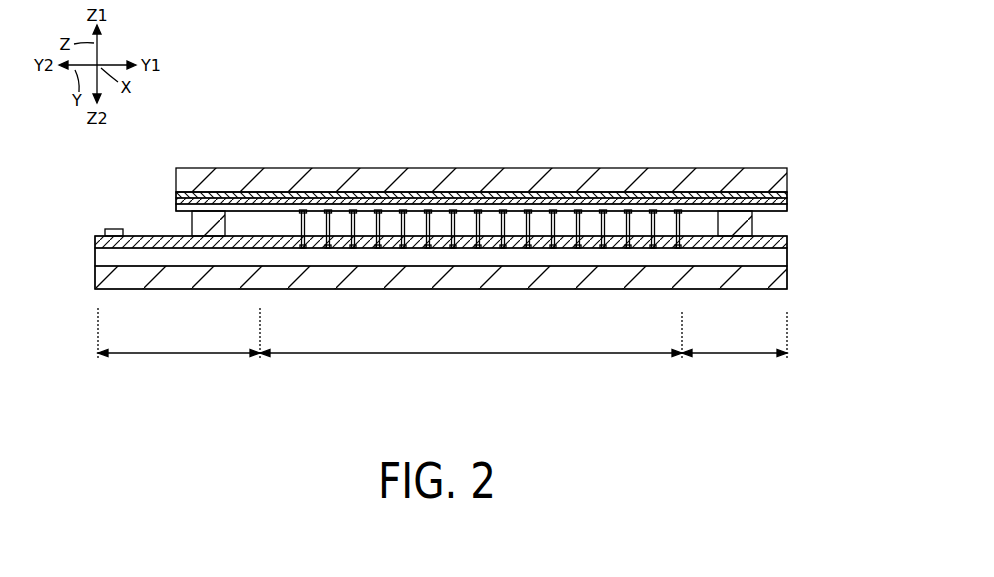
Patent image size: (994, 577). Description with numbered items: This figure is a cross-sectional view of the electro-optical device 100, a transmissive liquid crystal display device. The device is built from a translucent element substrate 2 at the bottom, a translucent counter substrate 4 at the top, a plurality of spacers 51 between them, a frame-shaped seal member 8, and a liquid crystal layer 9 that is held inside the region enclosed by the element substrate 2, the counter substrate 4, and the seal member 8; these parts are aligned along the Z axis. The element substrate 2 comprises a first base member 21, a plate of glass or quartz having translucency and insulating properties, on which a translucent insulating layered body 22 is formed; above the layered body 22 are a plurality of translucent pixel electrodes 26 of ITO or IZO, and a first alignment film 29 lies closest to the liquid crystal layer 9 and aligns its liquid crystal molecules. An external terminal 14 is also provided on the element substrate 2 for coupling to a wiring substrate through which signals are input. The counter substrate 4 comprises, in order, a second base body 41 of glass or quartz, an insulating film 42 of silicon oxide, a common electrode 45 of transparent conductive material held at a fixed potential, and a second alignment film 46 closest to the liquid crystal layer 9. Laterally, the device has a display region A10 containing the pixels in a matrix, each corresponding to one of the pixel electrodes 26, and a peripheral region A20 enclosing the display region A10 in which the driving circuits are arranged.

The electro-optical device 100 is at (756, 130).
The counter substrate 4 is at (793, 164).
The seal member 8 is at (793, 196).
The liquid crystal layer 9 is at (693, 230).
The external terminal 14 is at (117, 228).
The second base body 41 is at (228, 182).
The insulating film 42 is at (313, 196).
The common electrode 45 is at (345, 201).
The second alignment film 46 is at (386, 207).
The spacer 51 is at (452, 210).
The pixel electrode 26 is at (366, 250).
The first alignment film 29 is at (228, 240).
The layered body 22 is at (563, 258).
The first base member 21 is at (612, 278).
The element substrate 2 is at (797, 292).
The display region A10 is at (471, 370).
The peripheral region A20 is at (700, 355).